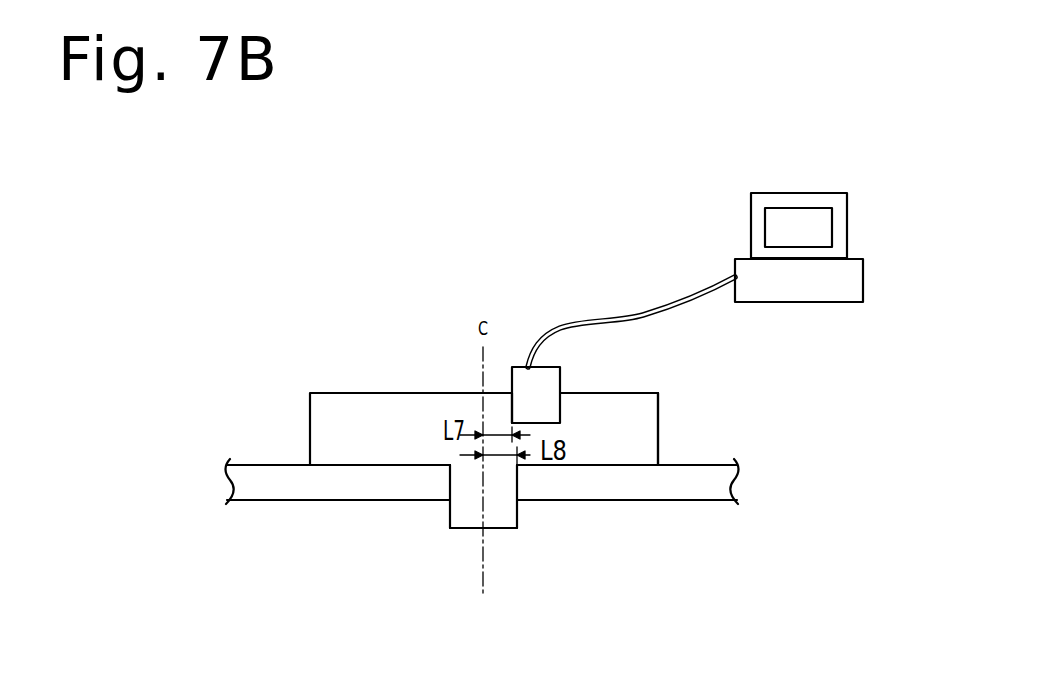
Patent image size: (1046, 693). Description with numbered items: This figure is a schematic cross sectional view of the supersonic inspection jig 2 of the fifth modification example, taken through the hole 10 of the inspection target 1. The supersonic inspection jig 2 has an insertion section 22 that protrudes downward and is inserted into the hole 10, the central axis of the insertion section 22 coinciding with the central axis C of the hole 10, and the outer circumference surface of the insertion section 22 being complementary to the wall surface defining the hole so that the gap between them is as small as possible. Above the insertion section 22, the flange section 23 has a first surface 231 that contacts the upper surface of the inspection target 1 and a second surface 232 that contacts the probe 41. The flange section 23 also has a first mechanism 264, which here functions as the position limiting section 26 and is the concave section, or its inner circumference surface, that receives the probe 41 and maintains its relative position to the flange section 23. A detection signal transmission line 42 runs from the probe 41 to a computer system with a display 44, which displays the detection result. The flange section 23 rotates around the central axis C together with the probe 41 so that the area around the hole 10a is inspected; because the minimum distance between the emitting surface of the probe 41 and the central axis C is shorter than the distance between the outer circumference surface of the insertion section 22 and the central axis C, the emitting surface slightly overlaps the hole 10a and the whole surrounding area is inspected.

The inspection target 1 is at (687, 490).
The supersonic inspection jig 2 is at (648, 415).
The hole 10 is at (518, 505).
The hole 10a is at (511, 533).
The insertion section 22 is at (457, 523).
The flange section 23 is at (648, 448).
The position limiting section 26 is at (560, 412).
The probe 41 is at (552, 381).
The detection signal transmission line 42 is at (678, 298).
The display 44 is at (803, 202).
The first surface 231 is at (384, 466).
The second surface 232 is at (530, 423).
The first mechanism 264 is at (645, 380).